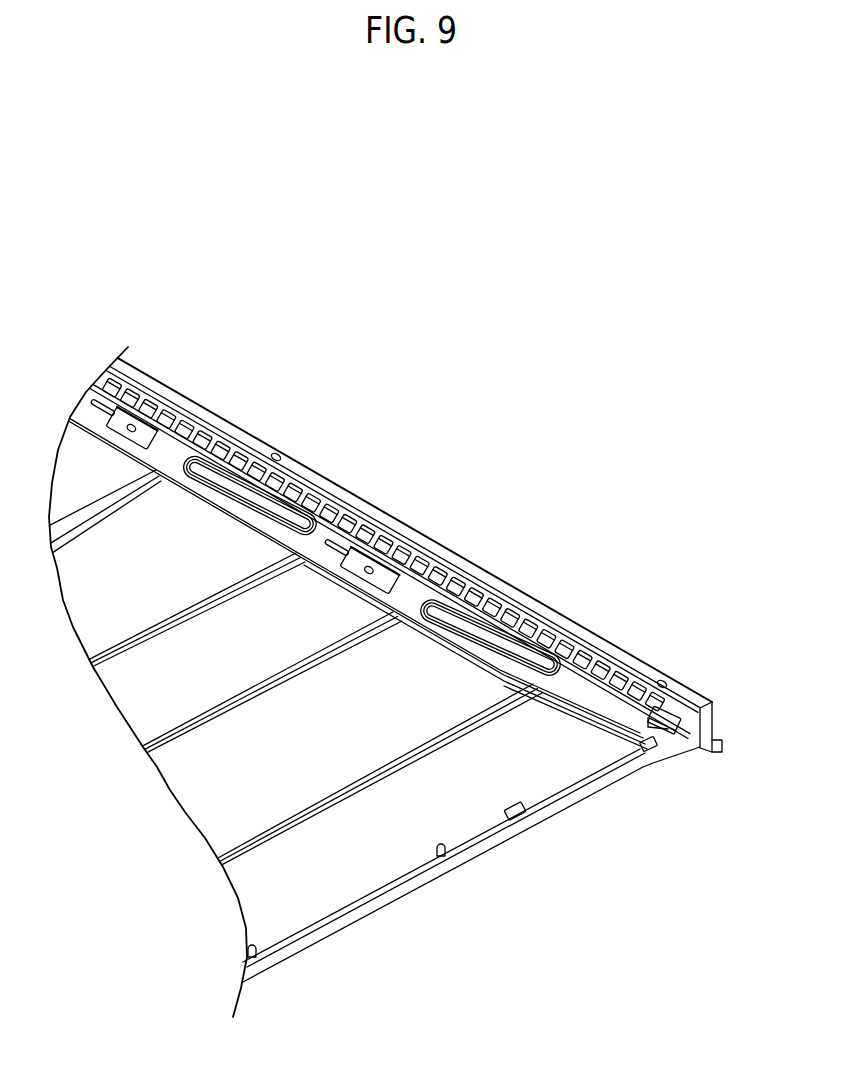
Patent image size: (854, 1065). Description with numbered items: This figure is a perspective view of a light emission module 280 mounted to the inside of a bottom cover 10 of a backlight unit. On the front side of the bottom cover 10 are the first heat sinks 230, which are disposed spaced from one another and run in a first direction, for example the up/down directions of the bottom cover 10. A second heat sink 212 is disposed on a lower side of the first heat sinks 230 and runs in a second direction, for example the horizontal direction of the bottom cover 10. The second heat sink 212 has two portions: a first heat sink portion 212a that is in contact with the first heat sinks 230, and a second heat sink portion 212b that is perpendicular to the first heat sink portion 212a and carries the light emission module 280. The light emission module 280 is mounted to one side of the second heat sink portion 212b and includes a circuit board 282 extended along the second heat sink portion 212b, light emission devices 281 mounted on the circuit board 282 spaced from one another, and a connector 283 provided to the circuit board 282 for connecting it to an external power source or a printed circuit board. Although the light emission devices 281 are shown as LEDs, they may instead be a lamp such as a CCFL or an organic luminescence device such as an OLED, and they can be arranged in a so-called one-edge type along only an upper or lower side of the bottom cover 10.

The bottom cover 10 is at (672, 740).
The second heat sink 212 is at (323, 537).
The first heat sink portion 212a is at (408, 584).
The second heat sink portion 212b is at (492, 598).
The first heat sink 230 is at (203, 808).
The light emission module 280 is at (627, 638).
The light emission device 281 is at (612, 678).
The circuit board 282 is at (582, 653).
The connector 283 is at (647, 710).